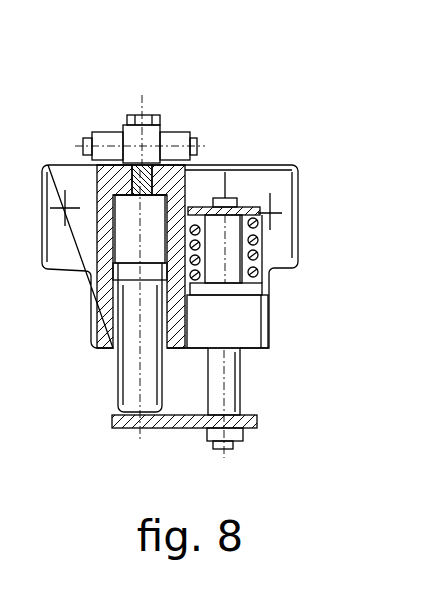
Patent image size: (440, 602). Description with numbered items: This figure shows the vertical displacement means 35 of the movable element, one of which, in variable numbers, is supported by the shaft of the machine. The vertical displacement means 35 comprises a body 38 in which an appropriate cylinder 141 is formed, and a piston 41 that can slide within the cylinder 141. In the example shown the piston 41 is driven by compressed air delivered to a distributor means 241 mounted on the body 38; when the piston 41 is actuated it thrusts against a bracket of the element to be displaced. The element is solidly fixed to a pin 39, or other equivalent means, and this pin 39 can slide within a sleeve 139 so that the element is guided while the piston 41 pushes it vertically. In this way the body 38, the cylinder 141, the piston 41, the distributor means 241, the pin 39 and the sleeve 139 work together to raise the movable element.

The vertical displacement means 35 is at (53, 138).
The body 38 is at (252, 181).
The pin 39 is at (226, 381).
The piston 41 is at (117, 389).
The sleeve 139 is at (233, 247).
The cylinder 141 is at (137, 240).
The distributor means 241 is at (152, 138).